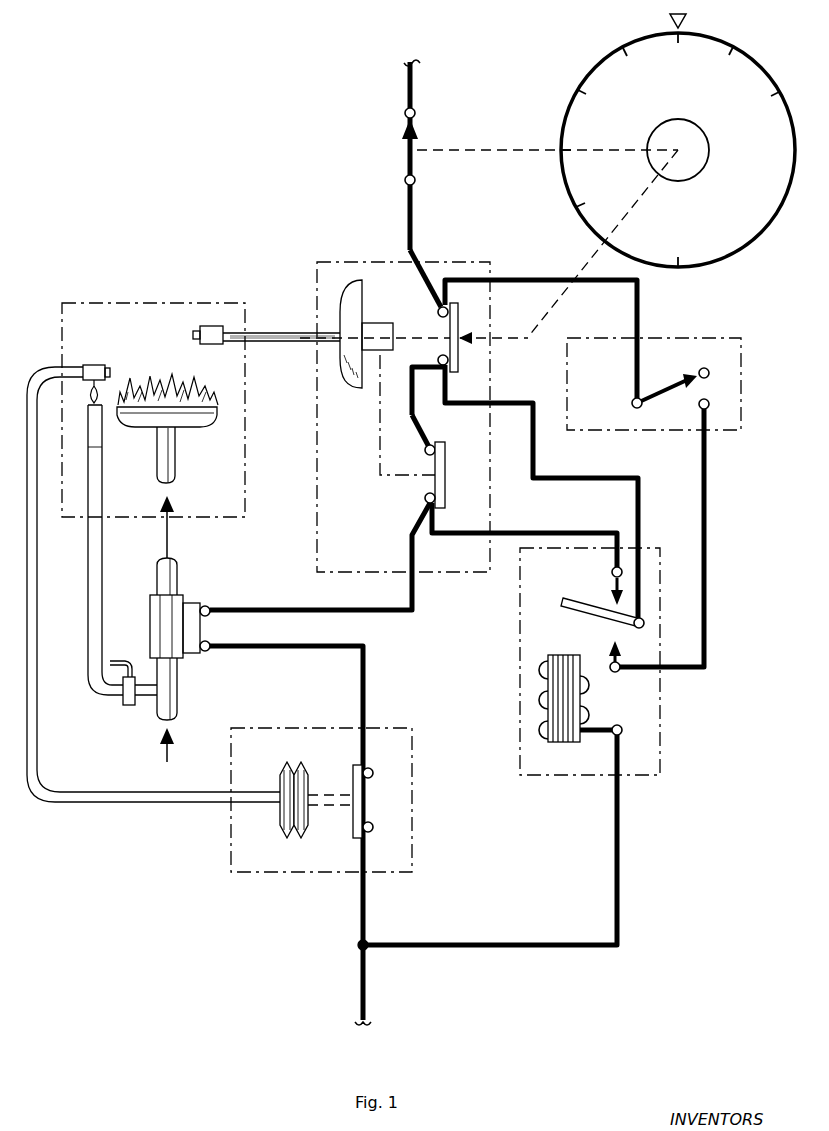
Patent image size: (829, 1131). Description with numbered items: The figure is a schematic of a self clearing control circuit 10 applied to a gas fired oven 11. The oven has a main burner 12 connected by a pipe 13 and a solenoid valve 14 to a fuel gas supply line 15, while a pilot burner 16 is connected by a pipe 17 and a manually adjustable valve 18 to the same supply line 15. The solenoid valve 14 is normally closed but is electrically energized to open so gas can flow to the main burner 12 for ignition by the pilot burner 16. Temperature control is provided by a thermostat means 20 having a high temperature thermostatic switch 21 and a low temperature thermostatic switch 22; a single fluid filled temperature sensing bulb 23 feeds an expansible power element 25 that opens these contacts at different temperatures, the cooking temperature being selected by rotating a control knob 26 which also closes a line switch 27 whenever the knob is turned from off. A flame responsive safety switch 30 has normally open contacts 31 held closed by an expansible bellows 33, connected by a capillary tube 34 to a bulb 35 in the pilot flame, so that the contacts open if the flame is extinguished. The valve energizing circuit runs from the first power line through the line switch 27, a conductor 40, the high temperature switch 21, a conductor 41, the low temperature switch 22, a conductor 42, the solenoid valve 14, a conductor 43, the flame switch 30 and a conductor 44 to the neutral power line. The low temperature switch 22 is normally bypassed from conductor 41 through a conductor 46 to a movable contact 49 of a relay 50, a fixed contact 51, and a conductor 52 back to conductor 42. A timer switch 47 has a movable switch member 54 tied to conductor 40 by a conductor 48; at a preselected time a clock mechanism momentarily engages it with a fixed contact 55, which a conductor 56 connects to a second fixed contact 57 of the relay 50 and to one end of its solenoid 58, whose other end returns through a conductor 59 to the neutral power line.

The control circuit 10 is at (326, 202).
The gas fired oven 11 is at (136, 297).
The main burner 12 is at (205, 424).
The pipe 13 is at (174, 465).
The solenoid valve 14 is at (152, 626).
The fuel gas supply line 15 is at (175, 692).
The pilot burner 16 is at (100, 448).
The pipe 17 is at (102, 563).
The manually adjustable valve 18 is at (130, 707).
The thermostat means 20 is at (381, 254).
The high temperature thermostatic switch 21 is at (455, 318).
The low temperature thermostatic switch 22 is at (446, 475).
The temperature sensing bulb 23 is at (343, 386).
The expansible power element 25 is at (200, 340).
The control knob 26 is at (607, 57).
The line switch 27 is at (414, 143).
The flame responsive safety switch 30 is at (281, 881).
The contacts 31 is at (362, 800).
The expansible bellows 33 is at (300, 768).
The capillary tube 34 is at (143, 803).
The bulb 35 is at (93, 365).
The conductor 40 is at (412, 207).
The conductor 41 is at (421, 433).
The conductor 42 is at (236, 608).
The conductor 43 is at (367, 668).
The conductor 44 is at (366, 905).
The conductor 46 is at (500, 403).
The timer switch 47 is at (750, 371).
The conductor 48 is at (527, 280).
The movable contact 49 is at (575, 603).
The relay 50 is at (672, 757).
The fixed contact 51 is at (611, 581).
The conductor 52 is at (503, 533).
The movable switch member 54 is at (661, 385).
The fixed contact 55 is at (699, 406).
The conductor 56 is at (708, 515).
The second fixed contact 57 is at (619, 661).
The solenoid 58 is at (580, 709).
The conductor 59 is at (620, 905).